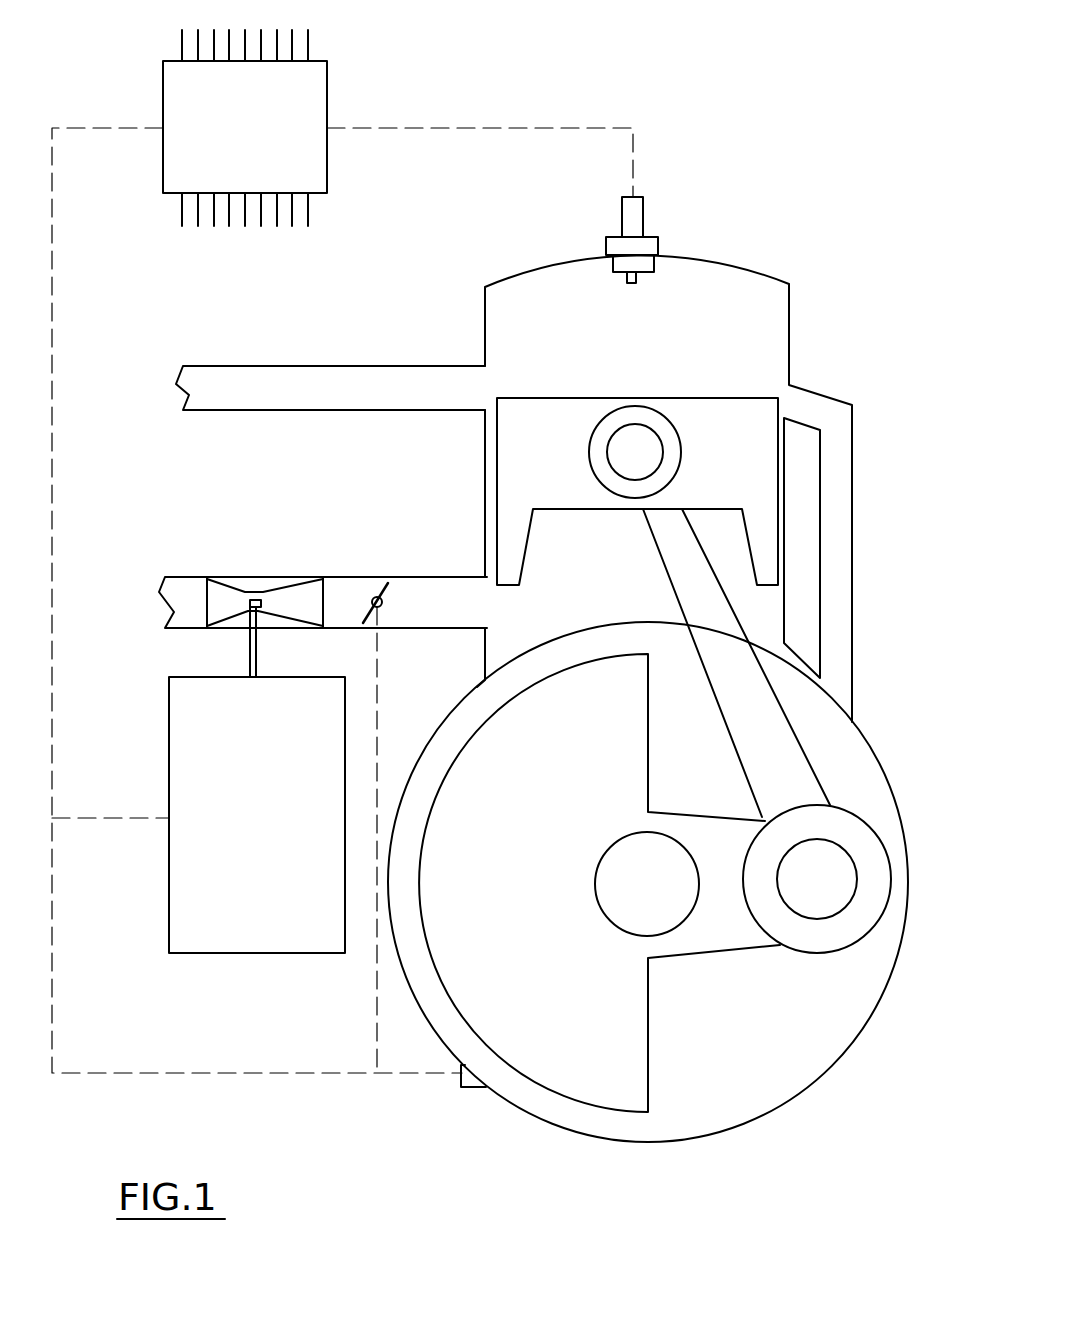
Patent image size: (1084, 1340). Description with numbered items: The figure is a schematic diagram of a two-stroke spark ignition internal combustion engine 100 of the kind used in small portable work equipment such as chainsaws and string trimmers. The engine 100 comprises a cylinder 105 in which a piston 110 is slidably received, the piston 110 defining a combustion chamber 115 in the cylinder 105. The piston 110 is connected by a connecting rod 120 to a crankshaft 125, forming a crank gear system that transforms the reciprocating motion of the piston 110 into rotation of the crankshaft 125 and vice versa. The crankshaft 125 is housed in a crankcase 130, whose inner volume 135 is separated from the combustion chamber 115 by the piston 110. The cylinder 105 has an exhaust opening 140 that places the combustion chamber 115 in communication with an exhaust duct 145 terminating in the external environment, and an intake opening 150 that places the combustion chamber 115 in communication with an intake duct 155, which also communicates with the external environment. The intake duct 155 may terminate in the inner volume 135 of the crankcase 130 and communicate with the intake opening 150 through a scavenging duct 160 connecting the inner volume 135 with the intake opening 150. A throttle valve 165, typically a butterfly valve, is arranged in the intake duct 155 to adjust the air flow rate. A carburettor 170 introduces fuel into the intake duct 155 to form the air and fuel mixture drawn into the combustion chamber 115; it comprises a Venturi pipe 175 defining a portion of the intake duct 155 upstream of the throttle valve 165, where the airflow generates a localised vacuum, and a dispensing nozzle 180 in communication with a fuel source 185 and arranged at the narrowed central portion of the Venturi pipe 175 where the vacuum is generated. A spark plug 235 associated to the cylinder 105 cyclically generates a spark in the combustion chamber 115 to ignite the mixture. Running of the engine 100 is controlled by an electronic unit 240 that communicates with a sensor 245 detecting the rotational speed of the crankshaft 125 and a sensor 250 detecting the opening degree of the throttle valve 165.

The internal combustion engine 100 is at (806, 211).
The cylinder 105 is at (790, 342).
The piston 110 is at (530, 437).
The combustion chamber 115 is at (612, 352).
The connecting rod 120 is at (733, 685).
The crankshaft 125 is at (660, 902).
The crankcase 130 is at (742, 1128).
The inner volume 135 is at (672, 1068).
The exhaust opening 140 is at (483, 388).
The exhaust duct 145 is at (253, 390).
The intake opening 150 is at (788, 402).
The intake duct 155 is at (175, 583).
The scavenging duct 160 is at (837, 530).
The throttle valve 165 is at (390, 568).
The carburettor 170 is at (268, 558).
The Venturi pipe 175 is at (242, 585).
The dispensing nozzle 180 is at (262, 598).
The fuel source 185 is at (185, 875).
The spark plug 235 is at (634, 218).
The electronic unit 240 is at (178, 106).
The engine speed sensor 245 is at (470, 1090).
The throttle position sensor 250 is at (377, 607).